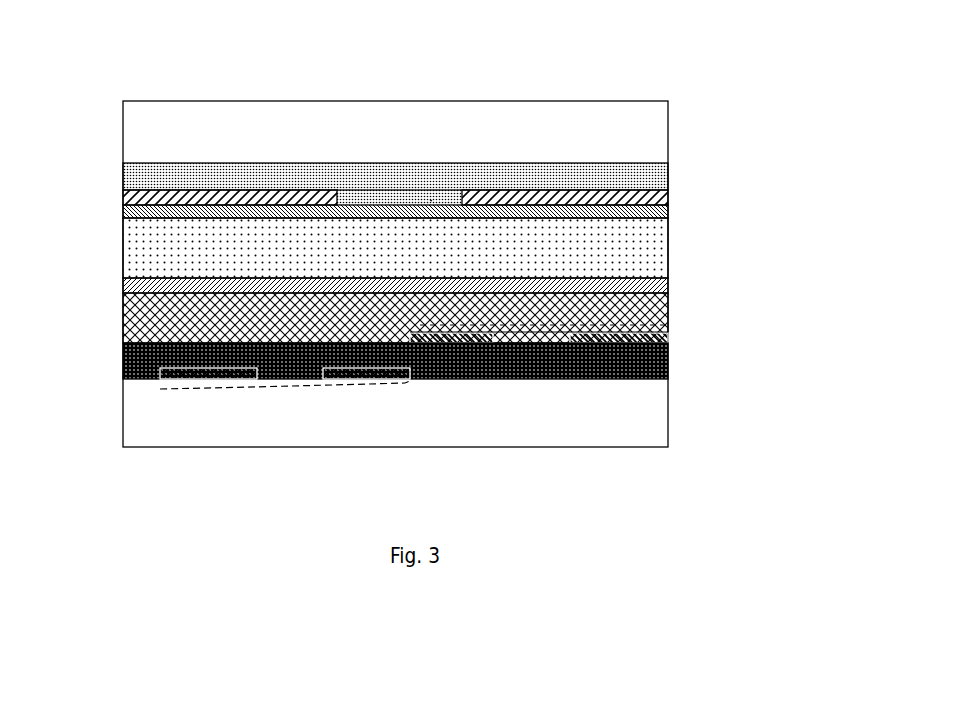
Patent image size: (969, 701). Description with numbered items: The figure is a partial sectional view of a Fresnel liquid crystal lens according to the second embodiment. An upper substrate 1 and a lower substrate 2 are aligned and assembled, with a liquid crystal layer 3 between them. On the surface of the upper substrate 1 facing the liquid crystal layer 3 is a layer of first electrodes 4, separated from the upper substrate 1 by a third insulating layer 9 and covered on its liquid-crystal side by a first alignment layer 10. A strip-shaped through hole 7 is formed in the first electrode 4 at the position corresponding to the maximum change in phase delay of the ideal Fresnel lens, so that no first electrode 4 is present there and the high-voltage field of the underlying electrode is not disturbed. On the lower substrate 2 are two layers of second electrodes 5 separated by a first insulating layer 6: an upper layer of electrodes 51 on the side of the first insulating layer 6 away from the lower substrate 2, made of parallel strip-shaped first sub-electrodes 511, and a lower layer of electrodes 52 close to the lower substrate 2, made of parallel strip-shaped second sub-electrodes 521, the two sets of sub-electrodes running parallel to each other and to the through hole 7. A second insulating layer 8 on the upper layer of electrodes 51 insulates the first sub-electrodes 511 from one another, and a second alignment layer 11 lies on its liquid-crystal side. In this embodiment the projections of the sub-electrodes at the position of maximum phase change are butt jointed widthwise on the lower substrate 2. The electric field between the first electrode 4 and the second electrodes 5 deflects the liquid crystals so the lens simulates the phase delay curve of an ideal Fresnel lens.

The upper substrate 1 is at (642, 136).
The lower substrate 2 is at (633, 420).
The liquid crystal layer 3 is at (148, 238).
The first electrode 4 is at (642, 200).
The second electrodes 5 is at (497, 378).
The first insulating layer 6 is at (665, 365).
The through hole 7 is at (430, 200).
The second insulating layer 8 is at (160, 313).
The third insulating layer 9 is at (145, 182).
The first alignment layer 10 is at (125, 212).
The second alignment layer 11 is at (655, 283).
The upper layer of electrodes 51 is at (677, 340).
The lower layer of electrodes 52 is at (170, 388).
The first sub-electrodes 511 is at (473, 380).
The second sub-electrodes 521 is at (347, 375).